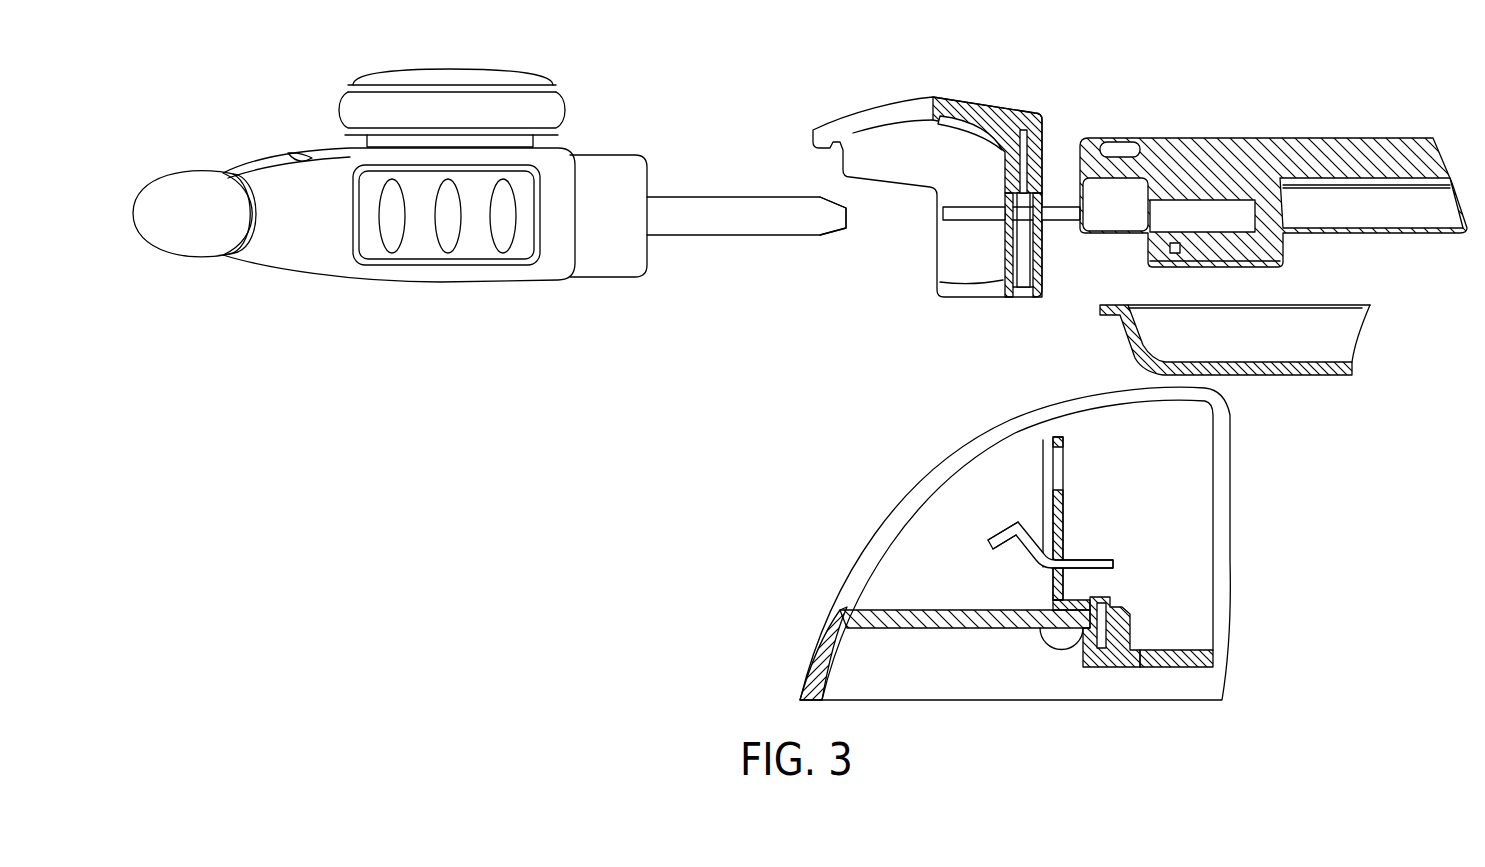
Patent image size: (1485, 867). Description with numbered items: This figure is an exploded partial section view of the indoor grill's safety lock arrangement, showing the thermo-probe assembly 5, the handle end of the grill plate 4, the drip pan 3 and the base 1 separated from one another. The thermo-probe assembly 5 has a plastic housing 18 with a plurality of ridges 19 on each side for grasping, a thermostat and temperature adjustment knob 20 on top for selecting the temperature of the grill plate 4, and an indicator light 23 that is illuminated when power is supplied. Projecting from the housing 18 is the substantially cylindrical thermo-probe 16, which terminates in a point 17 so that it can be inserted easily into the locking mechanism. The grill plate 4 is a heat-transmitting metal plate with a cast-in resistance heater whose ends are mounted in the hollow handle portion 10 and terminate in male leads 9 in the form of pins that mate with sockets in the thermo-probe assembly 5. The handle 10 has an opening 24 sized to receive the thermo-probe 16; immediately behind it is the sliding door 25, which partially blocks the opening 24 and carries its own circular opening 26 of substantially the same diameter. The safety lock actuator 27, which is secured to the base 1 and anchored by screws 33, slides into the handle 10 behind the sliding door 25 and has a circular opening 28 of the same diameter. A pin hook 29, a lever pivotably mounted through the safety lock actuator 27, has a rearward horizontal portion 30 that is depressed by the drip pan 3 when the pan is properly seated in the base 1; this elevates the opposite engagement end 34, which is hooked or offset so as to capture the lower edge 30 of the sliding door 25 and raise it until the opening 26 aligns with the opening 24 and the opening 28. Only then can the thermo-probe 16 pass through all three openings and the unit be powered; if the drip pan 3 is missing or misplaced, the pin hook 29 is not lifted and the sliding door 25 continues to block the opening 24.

The base 1 is at (866, 681).
The drip pan 3 is at (1214, 349).
The grill plate 4 is at (1232, 128).
The thermo-probe assembly 5 is at (563, 79).
The male leads 9 is at (1057, 204).
The handle portion 10 is at (928, 187).
The thermo-probe 16 is at (718, 213).
The point 17 is at (848, 218).
The housing 18 is at (300, 262).
The ridges 19 is at (448, 243).
The thermostat and temperature adjustment knob 20 is at (345, 96).
The indicator light 23 is at (293, 150).
The opening 24 is at (1005, 193).
The sliding door 25 is at (1020, 223).
The circular opening 26 is at (1030, 258).
The safety lock actuator 27 is at (1066, 505).
The circular opening 28 is at (1066, 463).
The pin hook 29 is at (1022, 553).
The rearward horizontal portion 30 is at (1115, 565).
The screws 33 is at (1090, 650).
The engagement end 34 is at (1003, 538).